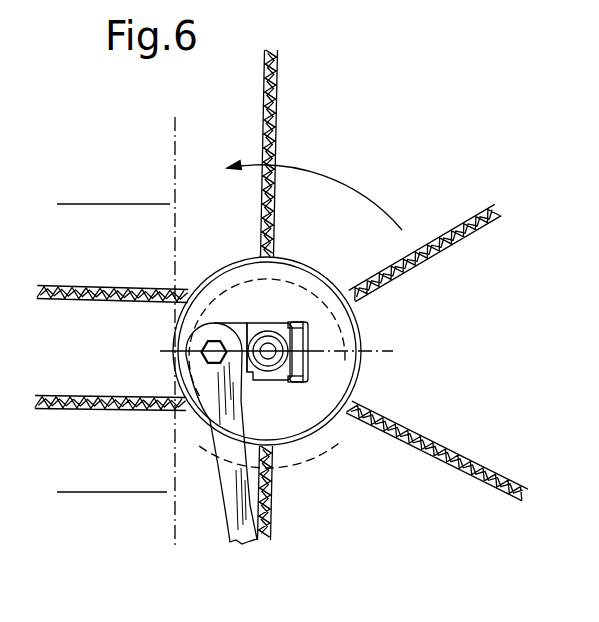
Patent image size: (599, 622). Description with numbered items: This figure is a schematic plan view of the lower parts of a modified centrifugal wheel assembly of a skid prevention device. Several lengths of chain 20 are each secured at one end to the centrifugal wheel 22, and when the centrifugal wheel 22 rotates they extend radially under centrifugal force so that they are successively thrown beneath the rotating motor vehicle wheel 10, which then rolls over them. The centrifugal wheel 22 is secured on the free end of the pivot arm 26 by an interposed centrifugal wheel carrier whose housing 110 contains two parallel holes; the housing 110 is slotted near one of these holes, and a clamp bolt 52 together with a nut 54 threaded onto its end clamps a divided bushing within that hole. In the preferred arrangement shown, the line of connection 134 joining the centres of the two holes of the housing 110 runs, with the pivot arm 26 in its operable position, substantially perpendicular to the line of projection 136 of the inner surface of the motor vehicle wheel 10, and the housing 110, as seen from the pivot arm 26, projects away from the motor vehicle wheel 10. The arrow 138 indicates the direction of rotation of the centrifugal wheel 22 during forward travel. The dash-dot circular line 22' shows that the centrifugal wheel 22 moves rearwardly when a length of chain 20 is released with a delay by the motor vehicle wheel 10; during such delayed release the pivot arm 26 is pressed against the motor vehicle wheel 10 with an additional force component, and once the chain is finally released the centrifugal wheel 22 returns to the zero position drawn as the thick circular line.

The motor vehicle wheel 10 is at (158, 242).
The lengths of chain 20 is at (279, 73).
The centrifugal wheel 22 is at (267, 330).
The dash-dot circular line 22' is at (276, 417).
The pivot arm 26 is at (233, 518).
The clamp bolt 52 is at (307, 318).
The nut 54 is at (303, 382).
The housing 110 is at (247, 323).
The line of connection 134 is at (382, 353).
The line of projection 136 is at (177, 137).
The arrow 138 is at (353, 187).